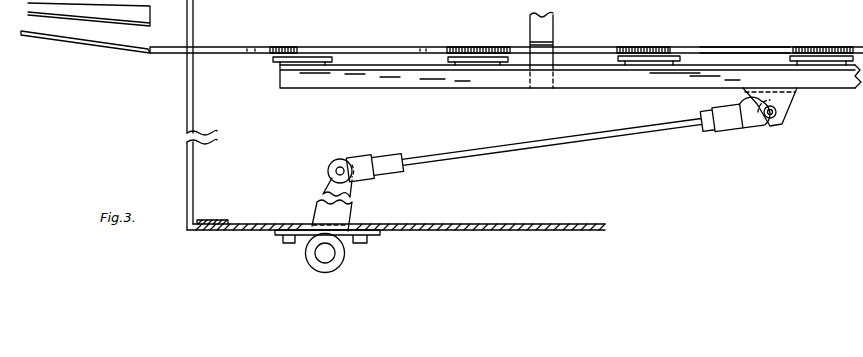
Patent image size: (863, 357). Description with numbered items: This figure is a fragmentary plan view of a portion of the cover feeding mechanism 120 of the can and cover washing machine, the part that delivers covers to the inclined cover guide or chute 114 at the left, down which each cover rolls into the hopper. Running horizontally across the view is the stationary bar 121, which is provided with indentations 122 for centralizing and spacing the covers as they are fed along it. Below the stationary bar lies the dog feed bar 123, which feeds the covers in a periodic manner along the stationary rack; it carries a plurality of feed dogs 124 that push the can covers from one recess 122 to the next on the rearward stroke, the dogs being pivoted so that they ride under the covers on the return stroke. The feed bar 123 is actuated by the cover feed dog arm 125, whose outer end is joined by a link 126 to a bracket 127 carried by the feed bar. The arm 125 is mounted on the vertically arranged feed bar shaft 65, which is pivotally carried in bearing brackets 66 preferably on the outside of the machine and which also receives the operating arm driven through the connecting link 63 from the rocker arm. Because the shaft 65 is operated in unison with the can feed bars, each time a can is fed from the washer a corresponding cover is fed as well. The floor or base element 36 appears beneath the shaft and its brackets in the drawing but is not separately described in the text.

The floor 36 is at (534, 228).
The connecting link 63 is at (440, 2).
The feed bar shaft 65 is at (316, 253).
The bearing brackets 66 is at (372, 235).
The cover guide or chute 114 is at (97, 37).
The cover feeding mechanism 120 is at (613, 43).
The stationary bar 121 is at (752, 33).
The indentations 122 is at (322, 47).
The dog feed bar 123 is at (657, 78).
The feed dogs 124 is at (328, 64).
The cover feed dog arm 125 is at (323, 213).
The link 126 is at (597, 133).
The bracket 127 is at (789, 98).